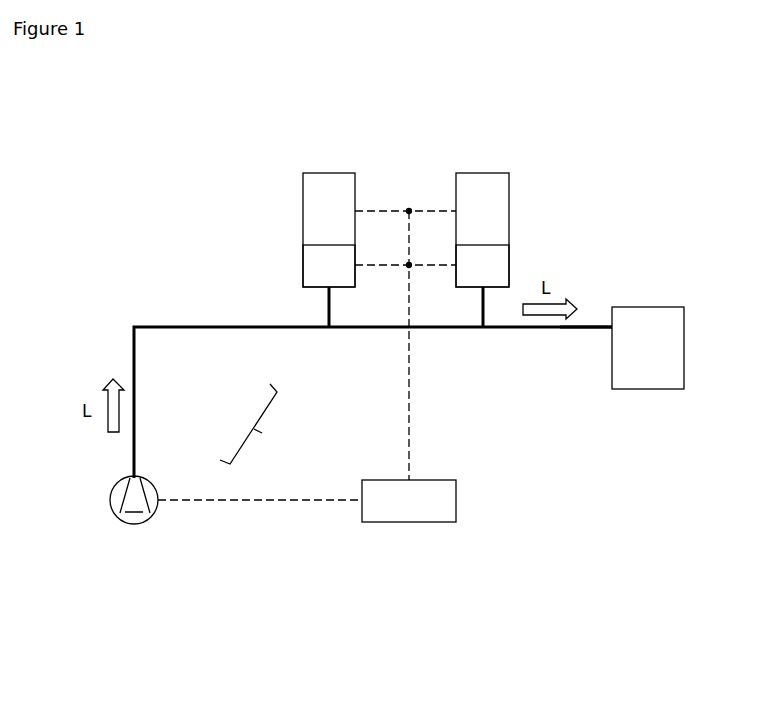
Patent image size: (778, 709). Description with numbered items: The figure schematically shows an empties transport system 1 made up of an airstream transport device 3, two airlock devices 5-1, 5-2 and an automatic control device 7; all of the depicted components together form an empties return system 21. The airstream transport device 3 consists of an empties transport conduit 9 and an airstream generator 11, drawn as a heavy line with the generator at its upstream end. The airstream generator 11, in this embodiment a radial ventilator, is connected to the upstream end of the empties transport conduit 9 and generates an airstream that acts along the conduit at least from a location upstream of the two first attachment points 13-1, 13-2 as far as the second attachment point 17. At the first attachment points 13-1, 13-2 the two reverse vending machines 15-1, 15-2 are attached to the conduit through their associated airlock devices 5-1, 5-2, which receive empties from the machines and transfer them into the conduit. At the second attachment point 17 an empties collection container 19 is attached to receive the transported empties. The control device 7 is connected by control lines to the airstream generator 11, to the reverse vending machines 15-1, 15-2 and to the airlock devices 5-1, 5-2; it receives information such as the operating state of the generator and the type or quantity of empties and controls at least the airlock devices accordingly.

The empties transport system 1 is at (252, 565).
The airstream transport device 3 is at (252, 424).
The airlock device 5-1 is at (303, 265).
The airlock device 5-2 is at (509, 265).
The automatic control device 7 is at (370, 478).
The empties transport conduit 9 is at (222, 330).
The airstream generator 11 is at (152, 482).
The first attachment point 13-1 is at (329, 330).
The first attachment point 13-2 is at (483, 330).
The reverse vending machine 15-1 is at (355, 183).
The reverse vending machine 15-2 is at (509, 183).
The second attachment point 17 is at (610, 332).
The empties collection container 19 is at (645, 306).
The empties return system 21 is at (620, 567).